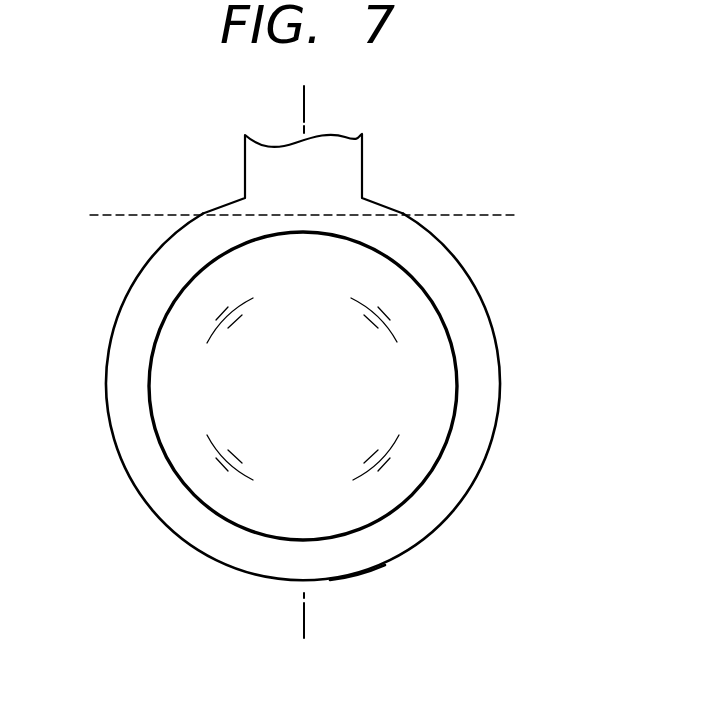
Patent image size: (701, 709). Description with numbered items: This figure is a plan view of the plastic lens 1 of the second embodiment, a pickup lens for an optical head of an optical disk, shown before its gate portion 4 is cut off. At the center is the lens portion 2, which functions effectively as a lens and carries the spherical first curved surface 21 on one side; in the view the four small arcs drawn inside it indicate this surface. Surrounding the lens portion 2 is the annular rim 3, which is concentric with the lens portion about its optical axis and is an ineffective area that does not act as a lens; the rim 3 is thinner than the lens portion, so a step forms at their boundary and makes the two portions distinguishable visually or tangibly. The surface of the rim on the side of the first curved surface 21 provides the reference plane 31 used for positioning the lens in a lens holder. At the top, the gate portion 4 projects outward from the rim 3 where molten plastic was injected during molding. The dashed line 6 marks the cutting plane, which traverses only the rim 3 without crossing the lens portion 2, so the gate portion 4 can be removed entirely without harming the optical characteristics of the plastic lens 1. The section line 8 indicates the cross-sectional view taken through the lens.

The plastic lens 1 is at (305, 348).
The lens portion 2 is at (408, 383).
The rim 3 is at (127, 360).
The gate portion 4 is at (330, 155).
The dashed line 6 is at (462, 213).
The section line 8- 8 is at (304, 86).
The first curved surface 21 is at (222, 410).
The reference plane 31 is at (375, 552).